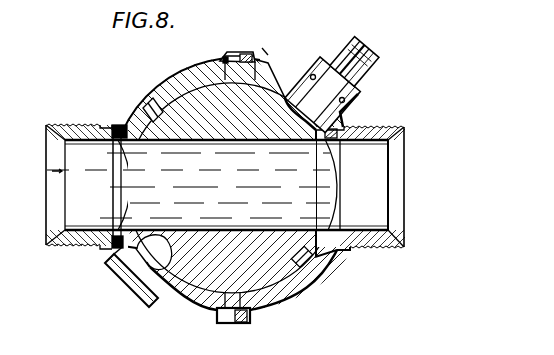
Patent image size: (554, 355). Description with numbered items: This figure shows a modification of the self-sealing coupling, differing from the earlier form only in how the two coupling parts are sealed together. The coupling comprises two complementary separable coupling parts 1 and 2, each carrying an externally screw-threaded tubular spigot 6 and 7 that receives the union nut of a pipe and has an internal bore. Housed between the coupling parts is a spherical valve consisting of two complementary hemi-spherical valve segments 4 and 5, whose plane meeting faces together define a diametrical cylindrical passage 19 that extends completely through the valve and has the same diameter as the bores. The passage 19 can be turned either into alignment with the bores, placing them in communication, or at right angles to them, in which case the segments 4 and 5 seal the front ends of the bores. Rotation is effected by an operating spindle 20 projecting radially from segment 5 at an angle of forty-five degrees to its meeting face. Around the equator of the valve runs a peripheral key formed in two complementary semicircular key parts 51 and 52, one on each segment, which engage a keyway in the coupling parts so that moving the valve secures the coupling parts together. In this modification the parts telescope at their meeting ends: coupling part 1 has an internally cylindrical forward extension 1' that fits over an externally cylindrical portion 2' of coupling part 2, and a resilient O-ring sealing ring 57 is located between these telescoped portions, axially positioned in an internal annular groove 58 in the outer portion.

The coupling part 1 is at (246, 180).
The internally cylindrical forward extension 1' is at (284, 37).
The coupling part 2 is at (311, 82).
The externally cylindrical portion 2' is at (251, 324).
The hemi-spherical valve segment 4 is at (242, 276).
The hemi-spherical valve segment 5 is at (237, 123).
The tubular spigot 6 is at (68, 128).
The tubular spigot 7 is at (372, 128).
The diametrical cylindrical passage 19 is at (288, 185).
The operating spindle 20 is at (366, 78).
The key part 51 is at (313, 270).
The key part 52 is at (140, 107).
The sealing ring 57 is at (247, 53).
The internal annular groove 58 is at (240, 55).